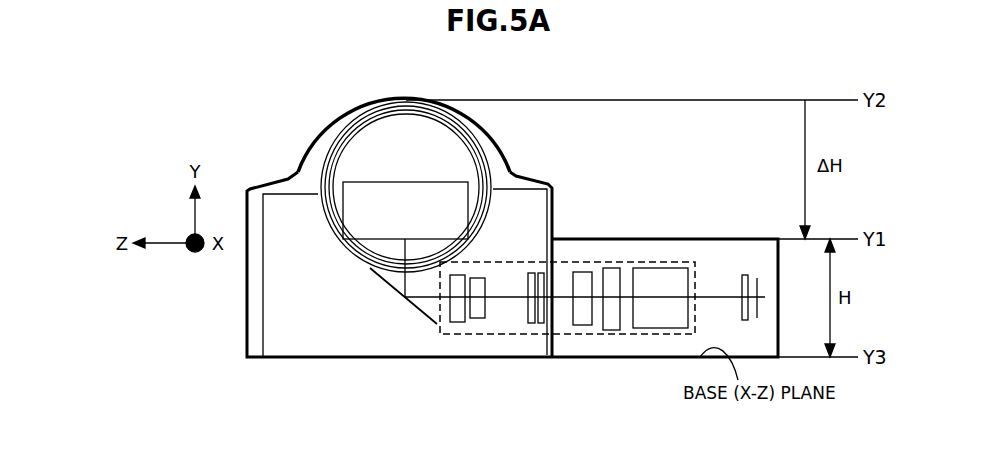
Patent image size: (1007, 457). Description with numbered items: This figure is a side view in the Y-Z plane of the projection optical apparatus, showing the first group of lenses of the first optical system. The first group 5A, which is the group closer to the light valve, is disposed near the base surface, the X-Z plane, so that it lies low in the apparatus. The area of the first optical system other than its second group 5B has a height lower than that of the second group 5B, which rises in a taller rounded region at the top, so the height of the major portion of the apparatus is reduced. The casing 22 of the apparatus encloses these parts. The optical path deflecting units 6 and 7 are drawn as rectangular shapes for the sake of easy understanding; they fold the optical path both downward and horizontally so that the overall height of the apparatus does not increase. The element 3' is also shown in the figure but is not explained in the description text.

The dome cover 5B is at (352, 125).
The component block 7 is at (353, 188).
The housing body 3' is at (373, 264).
The right housing section 22 is at (672, 238).
The optical unit 6 is at (434, 323).
The lens group 5A is at (607, 335).